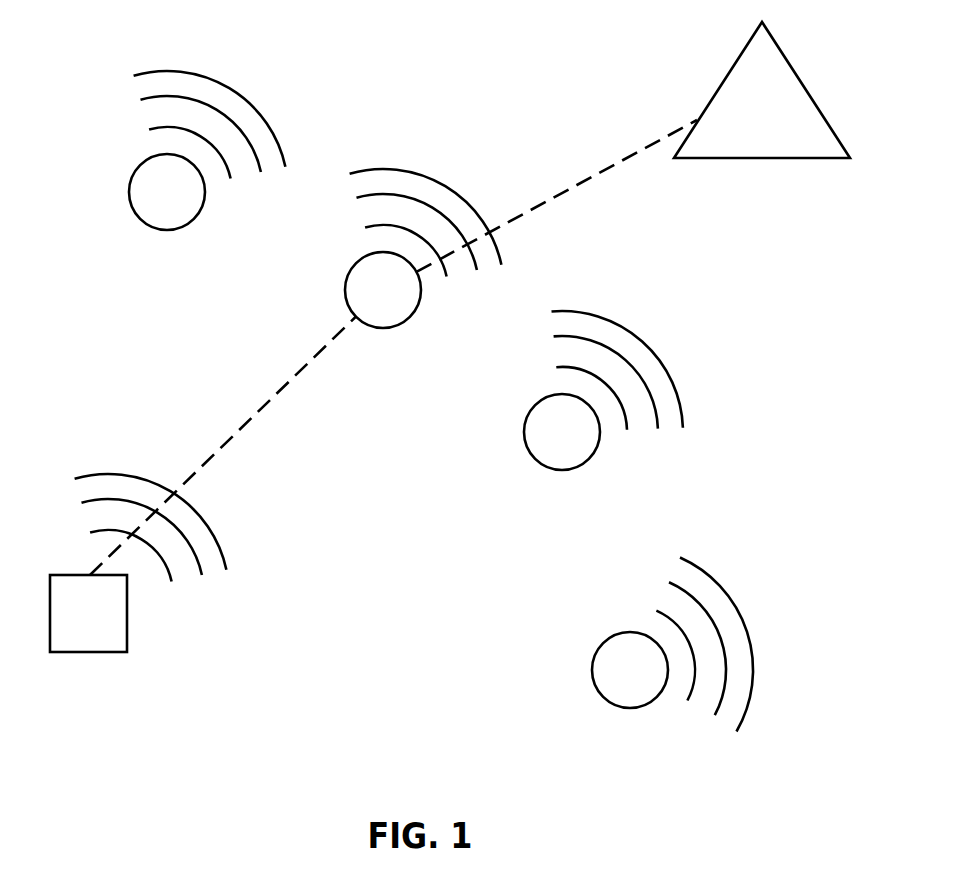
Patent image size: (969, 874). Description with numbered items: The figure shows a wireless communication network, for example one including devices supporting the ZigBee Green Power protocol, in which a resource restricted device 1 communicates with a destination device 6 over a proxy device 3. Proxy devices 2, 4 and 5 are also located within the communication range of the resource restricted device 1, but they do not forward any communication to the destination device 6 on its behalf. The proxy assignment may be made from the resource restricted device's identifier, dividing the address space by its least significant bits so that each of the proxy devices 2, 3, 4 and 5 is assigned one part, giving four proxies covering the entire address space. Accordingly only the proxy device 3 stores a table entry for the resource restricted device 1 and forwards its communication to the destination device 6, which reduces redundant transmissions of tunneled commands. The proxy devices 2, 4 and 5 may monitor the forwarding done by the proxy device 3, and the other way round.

The resource restricted device 1 is at (138, 563).
The proxy device 2 is at (207, 150).
The proxy device 3 is at (423, 248).
The proxy device 4 is at (603, 390).
The proxy device 5 is at (672, 645).
The destination device 6 is at (762, 90).